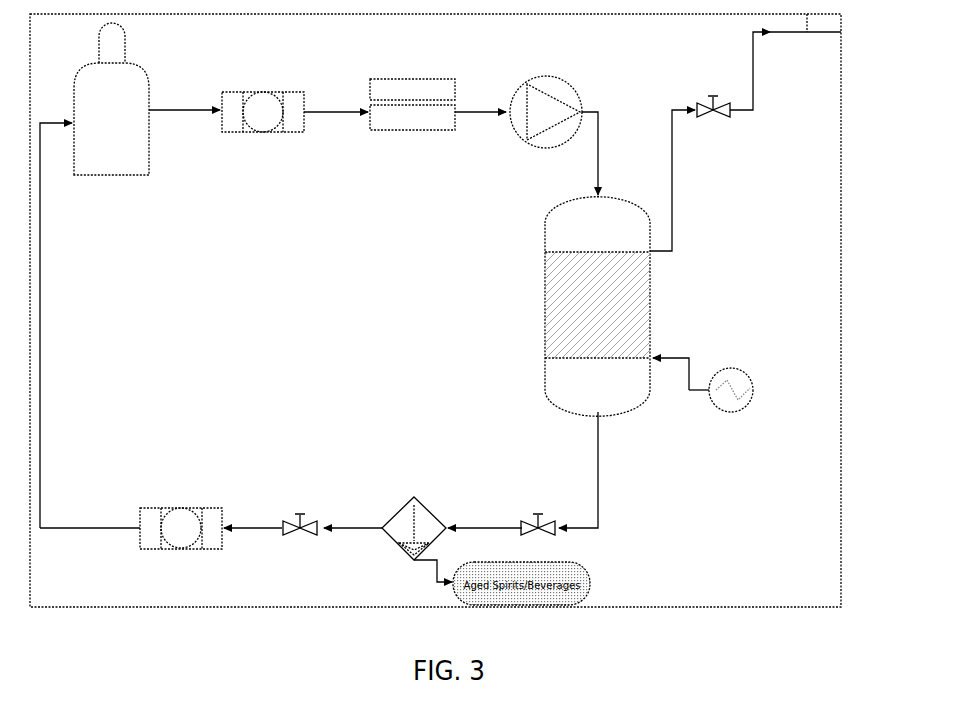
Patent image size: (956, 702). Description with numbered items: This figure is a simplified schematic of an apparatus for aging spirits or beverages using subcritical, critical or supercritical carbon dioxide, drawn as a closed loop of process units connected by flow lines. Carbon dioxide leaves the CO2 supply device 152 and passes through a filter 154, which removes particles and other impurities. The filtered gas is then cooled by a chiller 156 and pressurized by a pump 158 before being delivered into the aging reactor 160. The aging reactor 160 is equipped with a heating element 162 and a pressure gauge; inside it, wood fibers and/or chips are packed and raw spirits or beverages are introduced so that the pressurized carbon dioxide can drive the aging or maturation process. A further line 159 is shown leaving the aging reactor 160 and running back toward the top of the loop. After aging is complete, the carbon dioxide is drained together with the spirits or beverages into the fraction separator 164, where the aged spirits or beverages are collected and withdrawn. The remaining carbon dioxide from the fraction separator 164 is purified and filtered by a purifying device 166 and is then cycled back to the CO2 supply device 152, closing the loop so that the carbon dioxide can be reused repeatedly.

The CO2 supply device 152 is at (130, 180).
The filter 154 is at (261, 136).
The chiller 156 is at (419, 135).
The pump 158 is at (572, 80).
The vent/relief line with valve 159 is at (674, 155).
The aging reactor 160 is at (536, 302).
The heating element 162 is at (727, 415).
The fraction separator 164 is at (417, 490).
The purifying device 166 is at (184, 504).